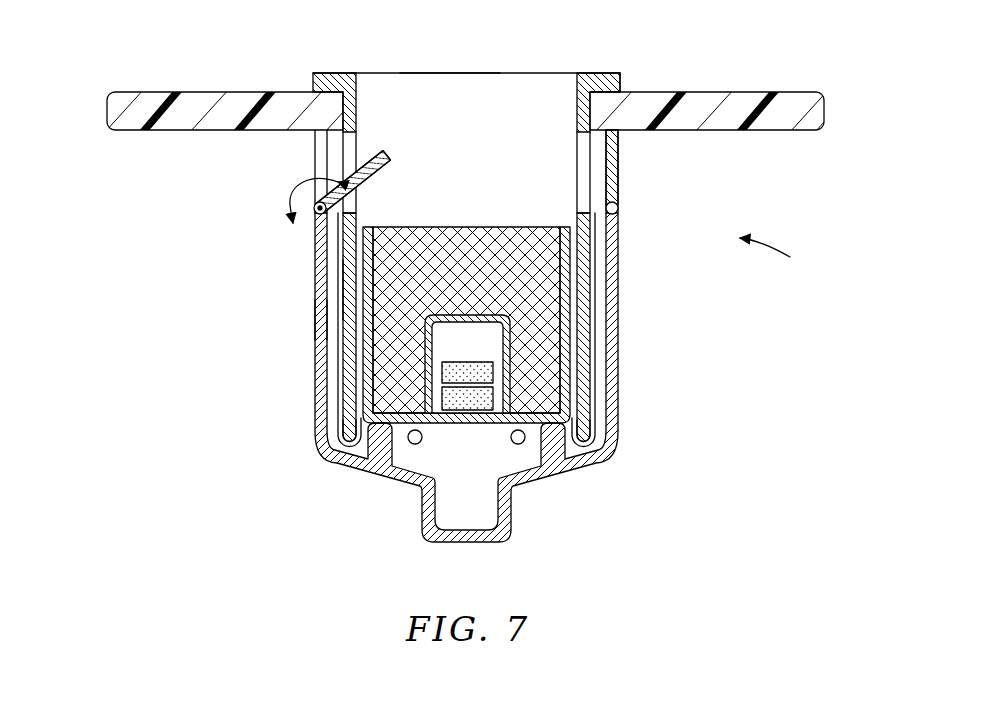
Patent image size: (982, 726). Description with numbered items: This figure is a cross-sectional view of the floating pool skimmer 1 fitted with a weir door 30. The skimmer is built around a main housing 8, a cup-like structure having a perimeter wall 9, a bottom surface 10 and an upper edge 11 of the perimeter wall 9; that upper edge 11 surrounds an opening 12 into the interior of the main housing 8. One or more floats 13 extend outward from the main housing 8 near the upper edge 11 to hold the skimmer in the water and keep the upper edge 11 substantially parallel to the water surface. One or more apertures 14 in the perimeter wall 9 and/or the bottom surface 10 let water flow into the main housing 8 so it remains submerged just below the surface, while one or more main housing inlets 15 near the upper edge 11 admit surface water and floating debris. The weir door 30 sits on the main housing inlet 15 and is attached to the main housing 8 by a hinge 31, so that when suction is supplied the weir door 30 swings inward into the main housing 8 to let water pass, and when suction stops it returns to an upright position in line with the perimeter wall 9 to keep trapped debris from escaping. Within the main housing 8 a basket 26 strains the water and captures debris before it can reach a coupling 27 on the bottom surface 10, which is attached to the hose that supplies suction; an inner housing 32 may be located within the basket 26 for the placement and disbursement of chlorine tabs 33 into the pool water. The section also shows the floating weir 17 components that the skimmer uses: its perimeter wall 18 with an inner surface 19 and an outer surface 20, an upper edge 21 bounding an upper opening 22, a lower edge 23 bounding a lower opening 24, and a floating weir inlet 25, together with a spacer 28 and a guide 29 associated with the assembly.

The floating pool skimmer 1 is at (778, 256).
The main housing 8 is at (465, 357).
The perimeter wall of main housing 9 is at (458, 265).
The bottom surface of main housing 10 is at (388, 474).
The upper edge of main housing 11 is at (619, 131).
The opening of main housing 12 is at (330, 212).
The float 13 is at (240, 92).
The aperture 14 is at (513, 441).
The main housing inlet 15 is at (318, 163).
The floating weir 17 is at (530, 73).
The perimeter wall of floating weir 18 is at (343, 287).
The inner surface of floating weir 19 is at (400, 107).
The outer surface of floating weir 20 is at (594, 268).
The upper edge of floating weir 21 is at (607, 73).
The upper opening of floating weir 22 is at (450, 73).
The lower edge of floating weir 23 is at (350, 440).
The lower opening of floating weir 24 is at (584, 440).
The floating weir inlet 25 is at (358, 148).
The basket 26 is at (545, 331).
The coupling 27 is at (468, 545).
The spacer 28 is at (327, 325).
The guide 29 is at (380, 432).
The weir door 30 is at (389, 163).
The hinge 31 is at (316, 215).
The inner housing 32 is at (433, 338).
The chlorine tab 33 is at (443, 396).